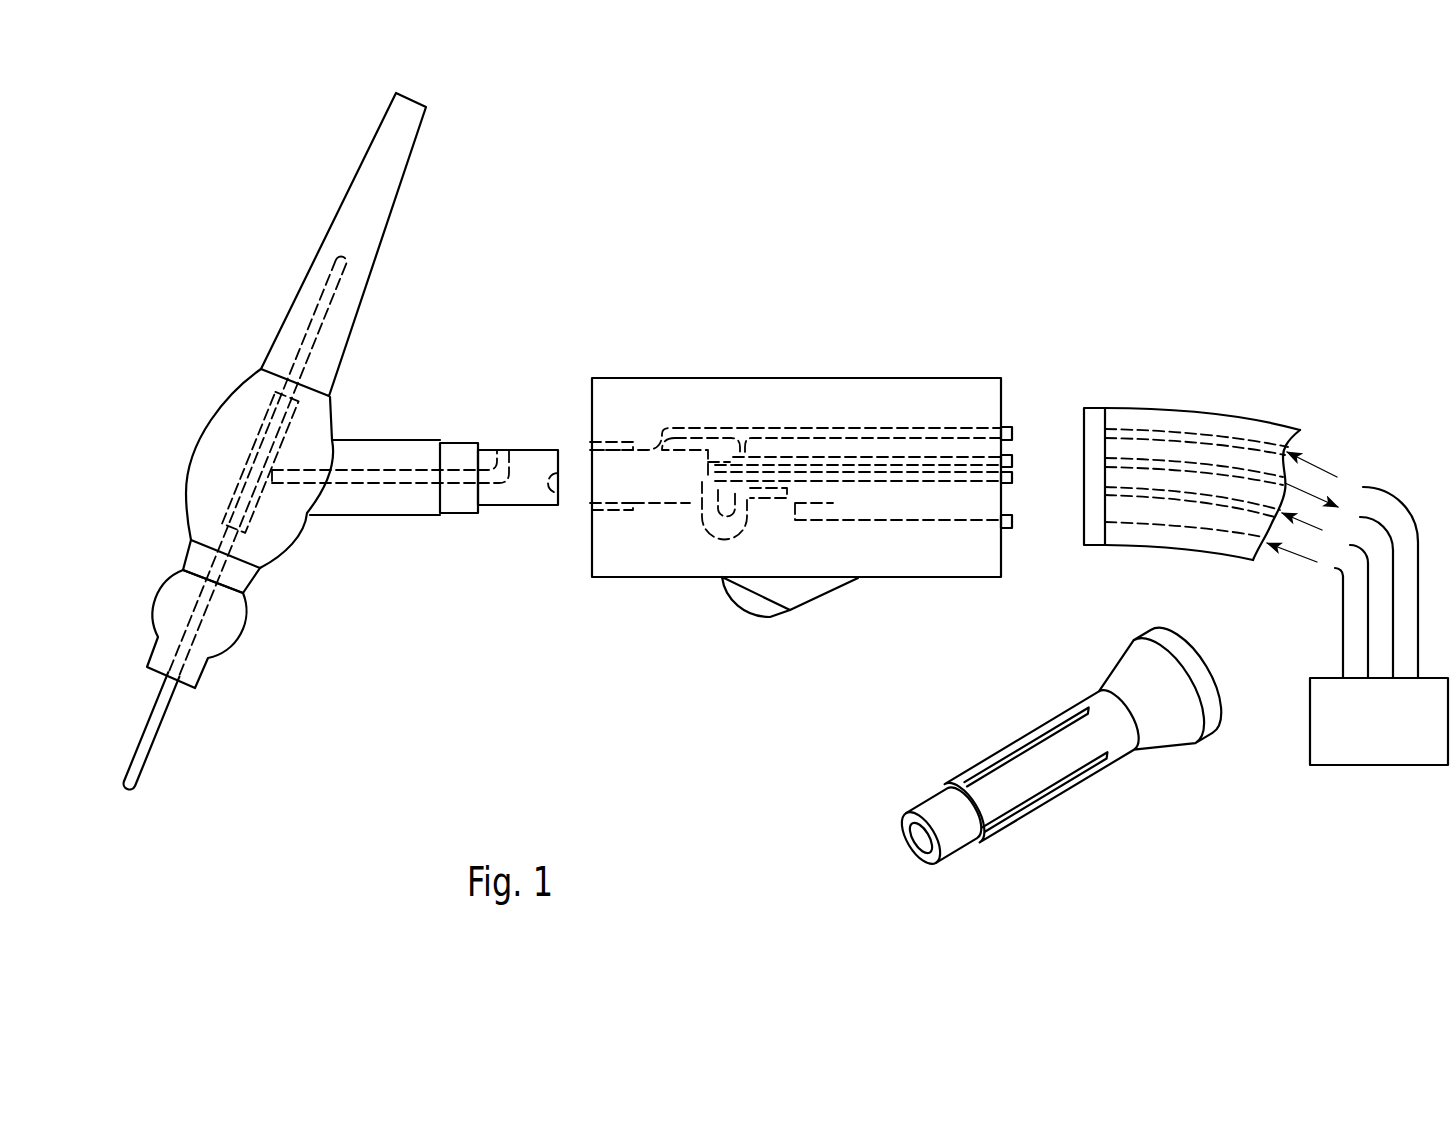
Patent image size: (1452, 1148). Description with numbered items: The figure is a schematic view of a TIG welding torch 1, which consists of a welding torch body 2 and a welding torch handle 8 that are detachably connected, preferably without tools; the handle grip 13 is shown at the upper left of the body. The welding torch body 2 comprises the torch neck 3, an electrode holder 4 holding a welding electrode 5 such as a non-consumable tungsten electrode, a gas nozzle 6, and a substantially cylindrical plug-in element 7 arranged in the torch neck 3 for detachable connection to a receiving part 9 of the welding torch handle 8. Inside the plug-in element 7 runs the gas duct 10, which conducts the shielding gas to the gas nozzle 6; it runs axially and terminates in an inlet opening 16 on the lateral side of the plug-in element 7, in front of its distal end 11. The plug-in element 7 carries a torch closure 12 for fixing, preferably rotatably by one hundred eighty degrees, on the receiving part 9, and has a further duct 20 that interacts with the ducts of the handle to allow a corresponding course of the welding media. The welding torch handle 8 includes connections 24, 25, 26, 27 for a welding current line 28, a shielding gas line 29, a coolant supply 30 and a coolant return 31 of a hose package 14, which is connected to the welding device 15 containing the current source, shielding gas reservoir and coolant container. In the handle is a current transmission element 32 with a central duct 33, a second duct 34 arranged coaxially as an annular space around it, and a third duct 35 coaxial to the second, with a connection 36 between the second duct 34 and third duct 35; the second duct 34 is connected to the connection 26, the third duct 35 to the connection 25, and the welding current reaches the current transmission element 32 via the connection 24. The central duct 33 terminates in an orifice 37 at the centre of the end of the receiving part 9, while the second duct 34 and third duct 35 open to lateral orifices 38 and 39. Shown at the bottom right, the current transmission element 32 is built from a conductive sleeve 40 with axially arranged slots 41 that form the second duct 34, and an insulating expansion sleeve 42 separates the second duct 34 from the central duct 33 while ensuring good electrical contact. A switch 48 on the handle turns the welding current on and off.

The TIG welding torch 1 is at (370, 672).
The welding torch body 2 is at (245, 253).
The torch neck 3 is at (230, 427).
The electrode holder 4 is at (242, 473).
The welding electrode 5 is at (142, 747).
The gas nozzle 6 is at (175, 608).
The plug-in element 7 is at (498, 452).
The welding torch handle 8 is at (792, 365).
The receiving part 9 is at (612, 477).
The gas duct 10 is at (383, 475).
The distal end 11 is at (555, 508).
The torch closure 12 is at (452, 438).
The handle 13 is at (382, 170).
The hose package 14 is at (1170, 380).
The welding device 15 is at (1401, 737).
The inlet opening 16 is at (505, 449).
The further duct 20 is at (545, 493).
The connection 24 is at (1007, 530).
The connection 25 is at (1007, 430).
The connection 26 is at (1007, 458).
The connection 27 is at (1008, 482).
The welding current line 28 is at (1167, 522).
The shielding gas line 29 is at (1203, 435).
The coolant supply 30 is at (1192, 495).
The coolant return 31 is at (1230, 472).
The current transmission element 32 is at (730, 452).
The central duct 33 is at (932, 477).
The second duct 34 is at (875, 463).
The third duct 35 is at (833, 433).
The connection 36 is at (736, 442).
The orifice 37 is at (708, 475).
The orifice 38 is at (692, 505).
The orifice 39 is at (657, 453).
The sleeve 40 is at (1052, 772).
The axially arranged slots 41 is at (1030, 802).
The expansion sleeve 42 is at (950, 827).
The switch 48 is at (750, 600).